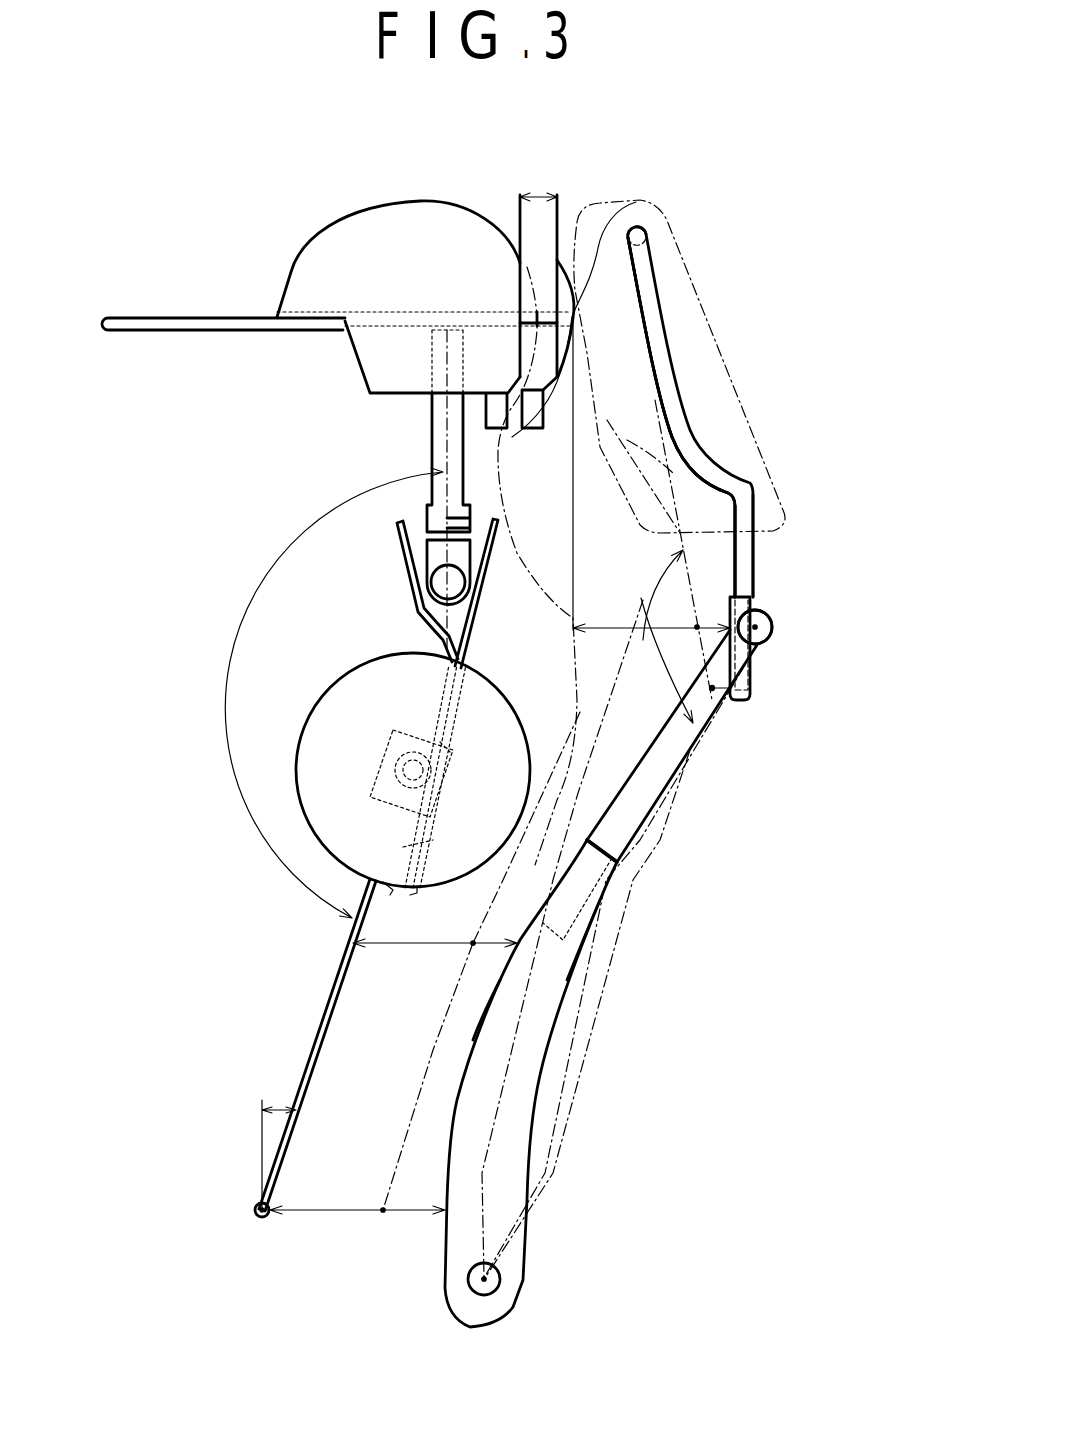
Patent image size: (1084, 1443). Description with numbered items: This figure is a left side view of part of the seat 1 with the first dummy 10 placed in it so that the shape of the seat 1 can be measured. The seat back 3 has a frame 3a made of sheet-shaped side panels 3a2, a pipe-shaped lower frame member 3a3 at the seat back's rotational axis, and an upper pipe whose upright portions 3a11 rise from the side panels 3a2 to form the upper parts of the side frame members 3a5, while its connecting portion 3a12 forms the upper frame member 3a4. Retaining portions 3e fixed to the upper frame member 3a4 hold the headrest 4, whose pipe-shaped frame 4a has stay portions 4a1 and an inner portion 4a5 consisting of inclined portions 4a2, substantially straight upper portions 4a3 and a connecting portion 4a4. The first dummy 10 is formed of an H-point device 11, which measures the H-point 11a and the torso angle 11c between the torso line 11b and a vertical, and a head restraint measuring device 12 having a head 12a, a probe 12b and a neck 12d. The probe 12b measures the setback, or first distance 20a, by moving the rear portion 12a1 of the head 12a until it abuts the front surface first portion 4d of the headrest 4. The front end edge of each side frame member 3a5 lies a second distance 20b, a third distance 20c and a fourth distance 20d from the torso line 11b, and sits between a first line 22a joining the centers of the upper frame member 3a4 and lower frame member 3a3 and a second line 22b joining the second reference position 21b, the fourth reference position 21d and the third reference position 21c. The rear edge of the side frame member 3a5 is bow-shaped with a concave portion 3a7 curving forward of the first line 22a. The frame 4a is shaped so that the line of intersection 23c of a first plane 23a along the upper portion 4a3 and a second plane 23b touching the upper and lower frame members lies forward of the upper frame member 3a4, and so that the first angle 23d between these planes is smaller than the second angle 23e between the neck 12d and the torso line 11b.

The seat 1 is at (743, 172).
The seat back 3 is at (728, 829).
The frame of the seat back 3a is at (705, 760).
The upright portion 3a11 is at (627, 822).
The connecting portion 3a12 is at (765, 627).
The side panel 3a2 is at (527, 1040).
The lower frame member 3a3 is at (484, 1280).
The upper frame member 3a4 is at (812, 652).
The side frame member 3a5 is at (653, 983).
The concave portion 3a7 is at (567, 980).
The retaining portion 3e is at (745, 603).
The headrest 4 is at (735, 328).
The frame of the headrest 4a is at (753, 455).
The stay portion 4a1 is at (747, 556).
The inclined portion 4a2 is at (697, 455).
The upper portion 4a3 is at (652, 287).
The connecting portion 4a4 is at (645, 234).
The inner portion 4a5 is at (746, 404).
The front surface first portion 4d is at (567, 293).
The first dummy 10 is at (213, 603).
The H-point device 11 is at (299, 686).
The H-point 11a is at (255, 1212).
The torso line 11b is at (316, 1040).
The torso angle 11c is at (262, 1108).
The head restraint measuring device (HRMD) 12 is at (300, 375).
The head 12a is at (370, 227).
The rear portion of the head 12a1 is at (572, 317).
The probe 12b is at (191, 302).
The neck 12d is at (437, 441).
The first distance 20a is at (538, 196).
The second distance 20b is at (608, 630).
The third distance 20c is at (305, 1212).
The fourth distance 20d is at (400, 945).
The second reference position 21b is at (697, 627).
The third reference position 21c is at (383, 1212).
The fourth reference position 21d is at (473, 943).
The first line 22a is at (610, 980).
The second line 22b is at (612, 740).
The first plane 23a is at (641, 440).
The second plane 23b is at (623, 910).
The line of intersection 23c is at (712, 688).
The first angle 23d is at (645, 660).
The second angle 23e is at (263, 548).